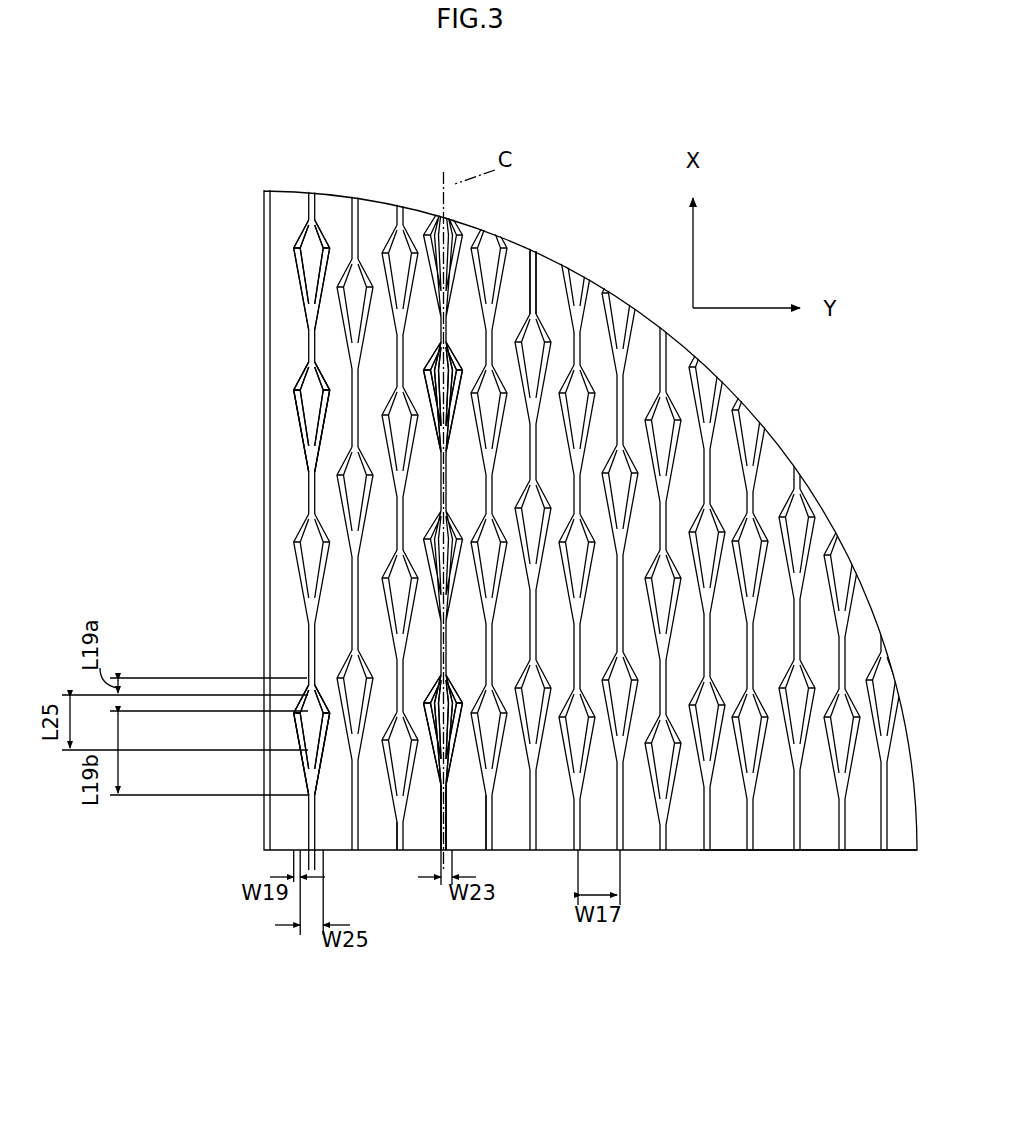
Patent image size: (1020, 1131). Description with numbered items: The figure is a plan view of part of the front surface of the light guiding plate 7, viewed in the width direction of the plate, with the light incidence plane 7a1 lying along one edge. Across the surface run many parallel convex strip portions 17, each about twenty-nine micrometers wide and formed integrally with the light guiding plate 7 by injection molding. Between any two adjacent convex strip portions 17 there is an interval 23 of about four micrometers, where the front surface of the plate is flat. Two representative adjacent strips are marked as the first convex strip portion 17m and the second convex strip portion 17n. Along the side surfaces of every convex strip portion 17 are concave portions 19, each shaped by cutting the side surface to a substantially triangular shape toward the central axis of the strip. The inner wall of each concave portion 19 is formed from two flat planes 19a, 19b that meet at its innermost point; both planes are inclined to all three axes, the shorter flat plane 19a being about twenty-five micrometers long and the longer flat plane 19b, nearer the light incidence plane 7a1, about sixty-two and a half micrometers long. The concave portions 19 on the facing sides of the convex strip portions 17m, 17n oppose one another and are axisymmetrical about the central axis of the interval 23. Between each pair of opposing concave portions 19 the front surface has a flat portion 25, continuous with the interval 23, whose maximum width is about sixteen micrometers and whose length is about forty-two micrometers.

The light guiding plate 7 is at (262, 239).
The light incidence plane 7a1 is at (735, 853).
The convex strip portion 17 is at (358, 205).
The first convex strip portion 17m is at (413, 837).
The second convex strip portion 17n is at (477, 840).
The concave portion 19 is at (311, 215).
The flat plane 19a is at (300, 272).
The flat plane 19b is at (322, 236).
The interval 23 is at (532, 251).
The flat portion 25 is at (300, 415).